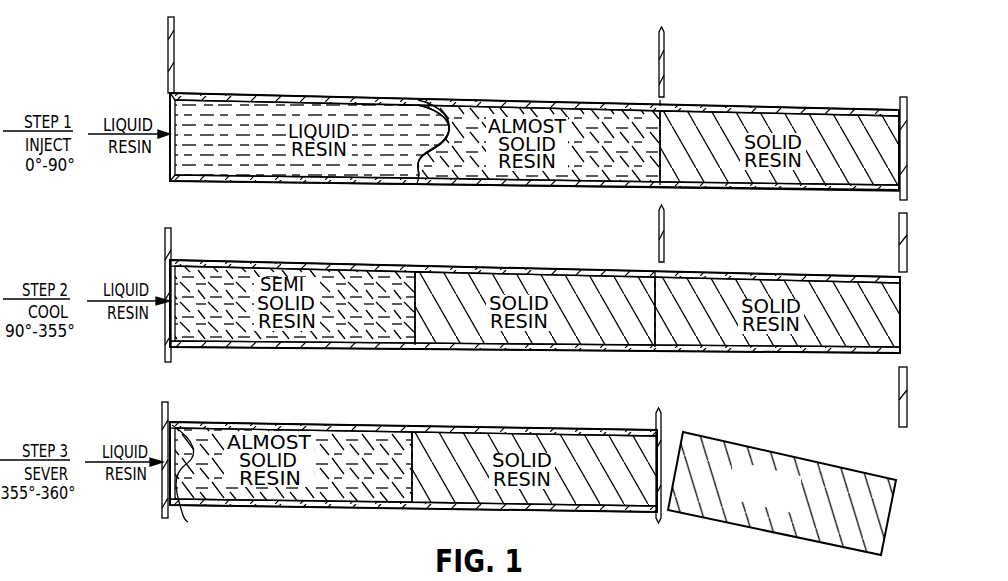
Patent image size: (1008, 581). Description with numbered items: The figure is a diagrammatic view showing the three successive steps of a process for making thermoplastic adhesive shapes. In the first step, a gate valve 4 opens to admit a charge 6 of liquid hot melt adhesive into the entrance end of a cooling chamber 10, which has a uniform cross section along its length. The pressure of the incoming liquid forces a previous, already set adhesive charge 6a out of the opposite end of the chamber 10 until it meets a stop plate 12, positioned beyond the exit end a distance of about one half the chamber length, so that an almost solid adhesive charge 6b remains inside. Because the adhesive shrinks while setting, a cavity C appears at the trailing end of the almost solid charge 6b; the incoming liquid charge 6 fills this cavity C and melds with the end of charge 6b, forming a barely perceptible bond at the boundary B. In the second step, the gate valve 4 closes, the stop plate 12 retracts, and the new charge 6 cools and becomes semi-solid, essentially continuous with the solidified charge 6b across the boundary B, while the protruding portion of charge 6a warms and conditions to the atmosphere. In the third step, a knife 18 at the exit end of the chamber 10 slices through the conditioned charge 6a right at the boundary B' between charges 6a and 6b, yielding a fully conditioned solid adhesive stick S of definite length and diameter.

The gate valve 4 is at (172, 418).
The charge of liquid thermoplastic 6 is at (217, 115).
The previous adhesive charge 6a is at (750, 120).
The almost solid adhesive charge 6b is at (485, 118).
The cooling chamber 10 is at (294, 100).
The stop plate 12 is at (899, 97).
The knife 18 is at (661, 420).
The boundary B is at (436, 370).
The boundary B' is at (690, 212).
The cavity C is at (428, 101).
The solid adhesive stick S is at (718, 510).